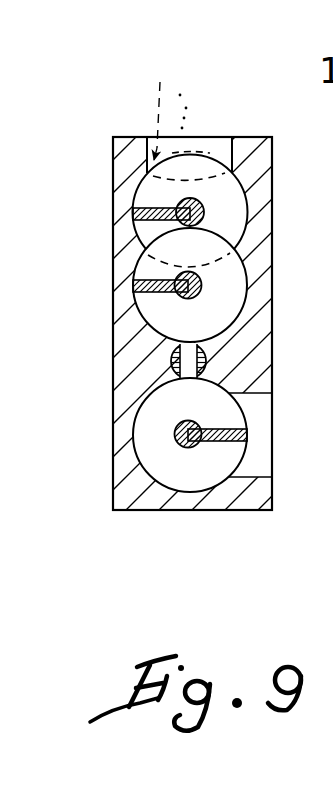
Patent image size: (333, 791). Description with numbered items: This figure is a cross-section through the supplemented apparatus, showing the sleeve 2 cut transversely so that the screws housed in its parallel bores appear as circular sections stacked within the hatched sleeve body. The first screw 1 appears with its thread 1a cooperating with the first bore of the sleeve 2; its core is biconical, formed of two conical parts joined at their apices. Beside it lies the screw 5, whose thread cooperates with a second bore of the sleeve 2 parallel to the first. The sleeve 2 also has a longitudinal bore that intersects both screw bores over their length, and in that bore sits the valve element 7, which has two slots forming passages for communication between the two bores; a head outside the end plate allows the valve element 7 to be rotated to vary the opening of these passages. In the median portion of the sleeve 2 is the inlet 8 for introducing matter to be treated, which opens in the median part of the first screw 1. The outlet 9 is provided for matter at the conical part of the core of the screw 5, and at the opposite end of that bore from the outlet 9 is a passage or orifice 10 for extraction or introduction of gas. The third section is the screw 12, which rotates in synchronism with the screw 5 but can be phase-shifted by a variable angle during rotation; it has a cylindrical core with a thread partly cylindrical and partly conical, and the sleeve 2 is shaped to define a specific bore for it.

The first screw 1 is at (233, 491).
The thread 1a is at (232, 445).
The sleeve 2 is at (217, 343).
The screw 5 is at (173, 316).
The valve element 7 is at (205, 360).
The inlet 8 is at (253, 455).
The outlet 9 is at (156, 105).
The passage or orifice 10 is at (215, 150).
The screw 12 is at (209, 198).